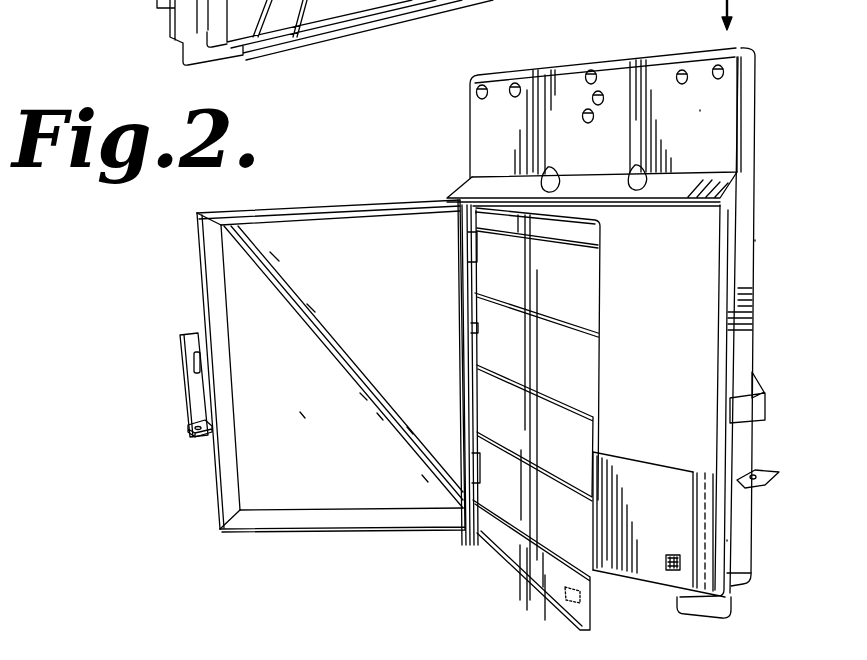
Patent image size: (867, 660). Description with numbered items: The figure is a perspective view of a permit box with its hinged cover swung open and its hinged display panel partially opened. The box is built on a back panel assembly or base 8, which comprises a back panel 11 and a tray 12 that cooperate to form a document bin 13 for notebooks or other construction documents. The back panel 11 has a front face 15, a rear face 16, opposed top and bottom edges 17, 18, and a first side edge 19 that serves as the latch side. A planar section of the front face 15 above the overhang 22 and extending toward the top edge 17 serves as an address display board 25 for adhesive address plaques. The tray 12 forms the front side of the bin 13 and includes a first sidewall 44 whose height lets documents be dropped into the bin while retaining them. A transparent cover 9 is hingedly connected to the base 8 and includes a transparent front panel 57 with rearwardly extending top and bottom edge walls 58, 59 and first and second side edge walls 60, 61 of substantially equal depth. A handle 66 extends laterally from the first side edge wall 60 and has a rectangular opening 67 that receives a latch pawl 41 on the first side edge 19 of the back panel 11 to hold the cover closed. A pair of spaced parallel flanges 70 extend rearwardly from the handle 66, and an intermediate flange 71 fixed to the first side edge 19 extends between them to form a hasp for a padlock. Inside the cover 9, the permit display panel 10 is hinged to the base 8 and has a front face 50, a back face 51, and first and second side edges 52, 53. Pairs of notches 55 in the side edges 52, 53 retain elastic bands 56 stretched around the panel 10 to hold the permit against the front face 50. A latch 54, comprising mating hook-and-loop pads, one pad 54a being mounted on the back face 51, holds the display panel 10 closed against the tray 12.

The back panel assembly 8 is at (759, 248).
The transparent cover 9 is at (186, 230).
The permit display panel 10 is at (492, 558).
The back panel 11 is at (758, 170).
The tray 12 is at (637, 467).
The document bin 13 is at (686, 465).
The front face 15 is at (663, 72).
The rear face 16 is at (757, 98).
The top edge 17 is at (535, 66).
The bottom edge 18 is at (663, 587).
The first side edge 19 is at (745, 333).
The overhang 22 is at (455, 196).
The address display board 25 is at (702, 120).
The latch pawl 41 is at (753, 407).
The first sidewall 44 is at (708, 537).
The front face 50 is at (571, 290).
The back face 51 is at (600, 282).
The first side edge 52 is at (535, 433).
The second side edge 53 is at (471, 328).
The latch 54 is at (665, 555).
The hook-and-loop pad 54a is at (562, 597).
The notches 55 is at (196, 2).
The elastic band 56 is at (497, 238).
The transparent front panel 57 is at (300, 430).
The top edge wall 58 is at (297, 210).
The bottom edge wall 59 is at (302, 530).
The first side edge wall 60 is at (197, 259).
The second side edge wall 61 is at (458, 305).
The handle 66 is at (181, 376).
The rectangular opening 67 is at (202, 363).
The parallel flanges 70 is at (186, 432).
The intermediate flange 71 is at (760, 473).